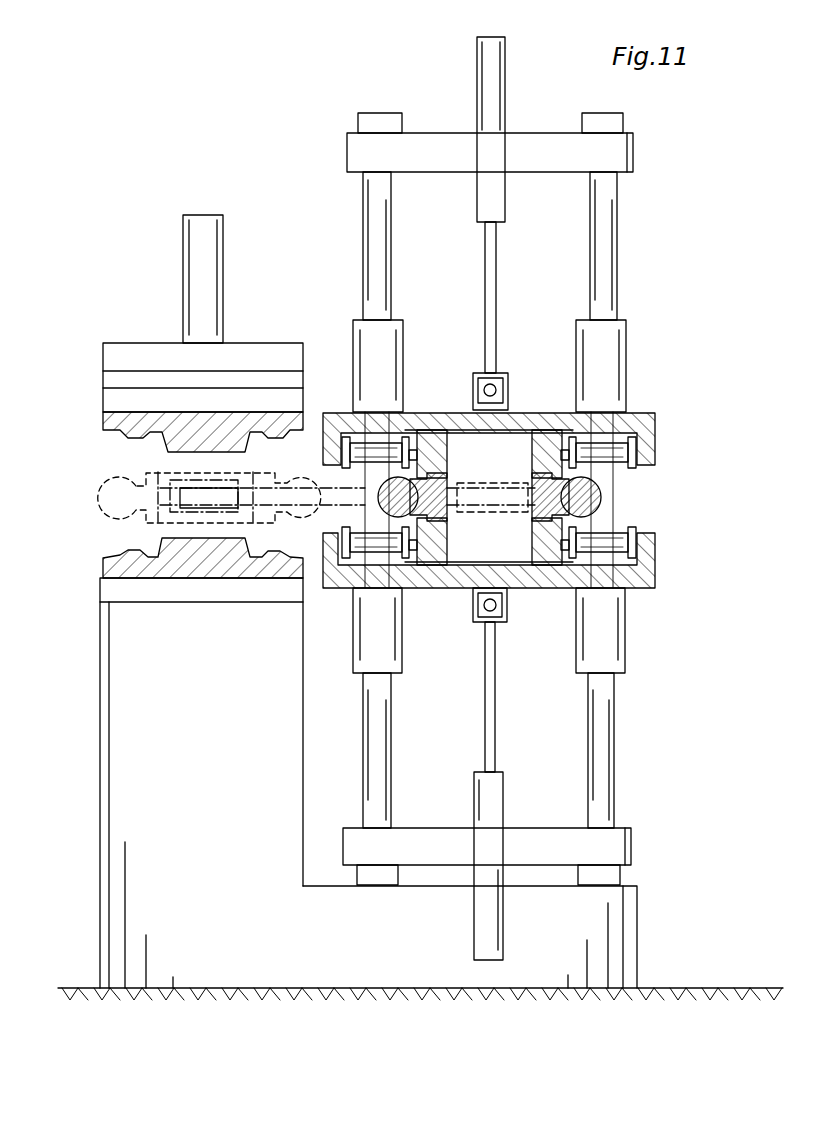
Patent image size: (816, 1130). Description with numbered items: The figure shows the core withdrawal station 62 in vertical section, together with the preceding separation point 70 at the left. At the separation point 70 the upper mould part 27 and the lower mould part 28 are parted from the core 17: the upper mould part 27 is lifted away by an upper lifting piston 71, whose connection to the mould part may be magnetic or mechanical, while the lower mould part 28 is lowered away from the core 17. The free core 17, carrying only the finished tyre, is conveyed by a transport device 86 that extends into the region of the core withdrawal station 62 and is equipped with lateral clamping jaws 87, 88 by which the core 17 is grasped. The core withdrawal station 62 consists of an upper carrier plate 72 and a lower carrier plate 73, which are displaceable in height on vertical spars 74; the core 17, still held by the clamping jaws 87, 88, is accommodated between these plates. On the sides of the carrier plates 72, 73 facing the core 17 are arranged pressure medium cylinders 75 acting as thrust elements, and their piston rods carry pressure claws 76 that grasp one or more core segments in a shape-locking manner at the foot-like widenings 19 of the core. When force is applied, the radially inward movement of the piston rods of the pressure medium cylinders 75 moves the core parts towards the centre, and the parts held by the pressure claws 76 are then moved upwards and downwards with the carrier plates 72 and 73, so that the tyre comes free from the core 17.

The core withdrawal station 62 is at (354, 100).
The vertical spars 74 is at (381, 229).
The upper carrier plate 72 is at (523, 411).
The lower carrier plate 73 is at (647, 572).
The pressure claws 76 is at (439, 412).
The pressure medium cylinders 75 is at (370, 454).
The foot-like widening 19 is at (444, 484).
The transport device 86 is at (320, 499).
The core 17 is at (106, 505).
The clamping jaw 87 is at (176, 510).
The clamping jaw 88 is at (204, 496).
The separation point 70 is at (241, 262).
The upper lifting piston 71 is at (243, 356).
The upper mould part 27 is at (112, 438).
The lower mould part 28 is at (265, 576).